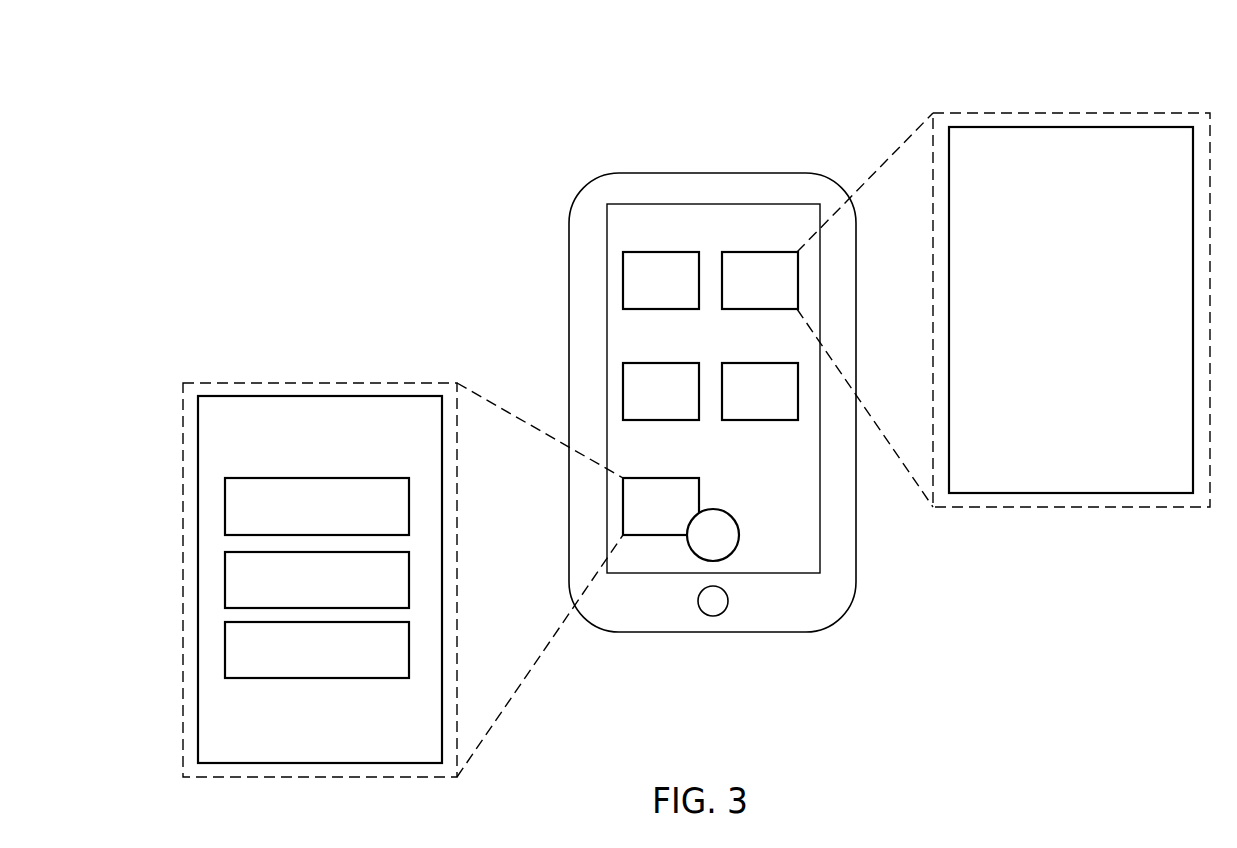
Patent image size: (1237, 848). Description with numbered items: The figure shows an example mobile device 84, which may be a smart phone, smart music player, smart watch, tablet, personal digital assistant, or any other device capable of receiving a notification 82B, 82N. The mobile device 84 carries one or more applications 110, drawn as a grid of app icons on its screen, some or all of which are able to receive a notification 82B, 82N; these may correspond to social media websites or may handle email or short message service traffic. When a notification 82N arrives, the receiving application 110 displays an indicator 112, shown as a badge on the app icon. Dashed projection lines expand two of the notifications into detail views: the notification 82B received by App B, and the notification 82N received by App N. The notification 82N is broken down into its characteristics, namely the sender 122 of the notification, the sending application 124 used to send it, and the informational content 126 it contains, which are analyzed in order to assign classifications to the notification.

The applications 110 is at (623, 280).
The indicator 112 is at (739, 528).
The notification 82N is at (228, 382).
The sender 122 is at (409, 504).
The sending application 124 is at (409, 580).
The informational content 126 is at (409, 653).
The notification 82B is at (965, 112).
The mobile device 84 is at (1066, 83).